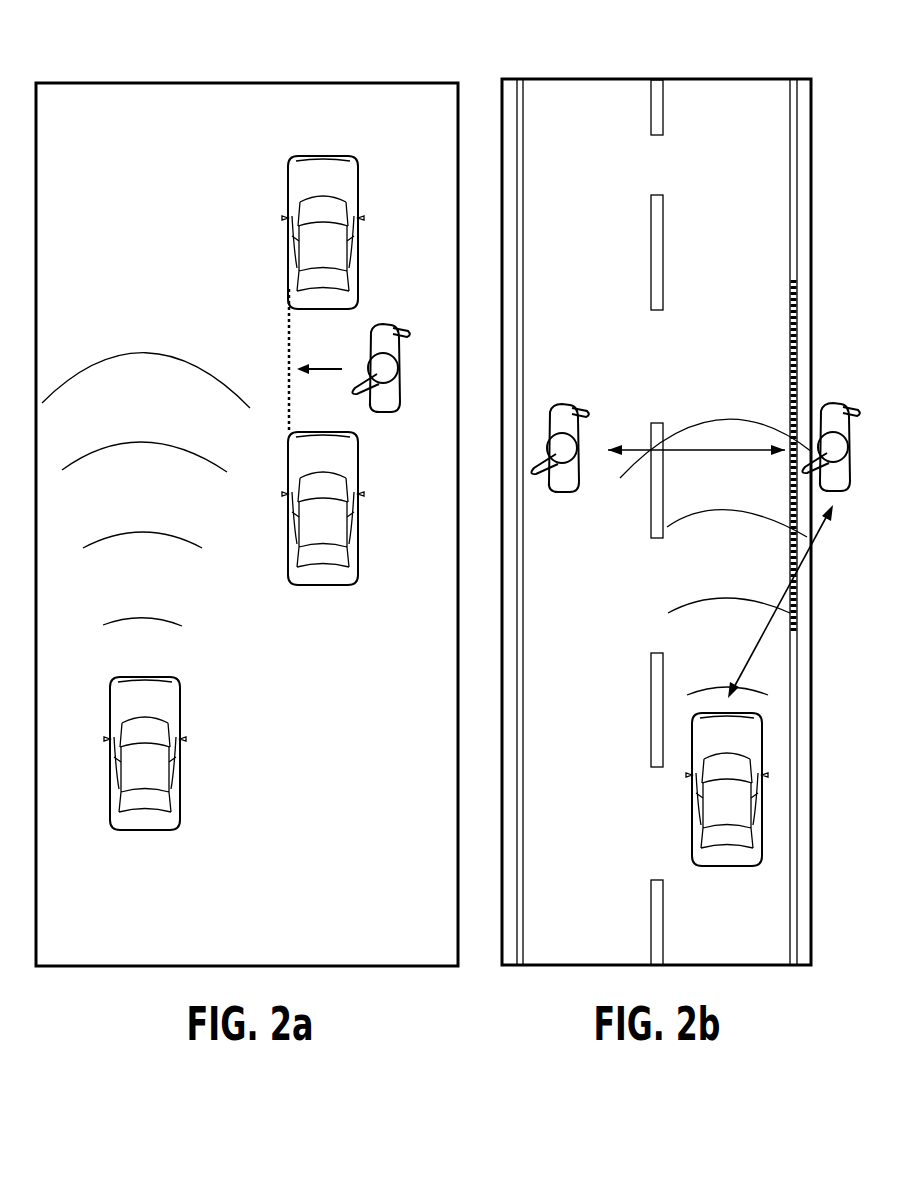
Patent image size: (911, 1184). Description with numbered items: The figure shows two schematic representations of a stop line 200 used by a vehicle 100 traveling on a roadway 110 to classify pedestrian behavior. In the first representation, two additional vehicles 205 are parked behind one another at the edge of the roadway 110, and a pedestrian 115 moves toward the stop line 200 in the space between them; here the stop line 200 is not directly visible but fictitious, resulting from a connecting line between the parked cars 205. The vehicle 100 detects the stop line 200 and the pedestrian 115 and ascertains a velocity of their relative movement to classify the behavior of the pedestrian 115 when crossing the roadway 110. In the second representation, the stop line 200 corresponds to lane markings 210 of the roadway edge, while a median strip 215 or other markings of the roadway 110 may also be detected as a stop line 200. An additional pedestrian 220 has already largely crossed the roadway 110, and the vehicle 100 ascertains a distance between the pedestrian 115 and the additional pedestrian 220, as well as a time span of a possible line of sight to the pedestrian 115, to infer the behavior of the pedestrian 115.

In FIG. 2A, the vehicle 100 is at (180, 705).
In FIG. 2B, the vehicle 100 is at (691, 797).
In FIG. 2A, the roadway 110 is at (128, 124).
In FIG. 2B, the roadway 110 is at (725, 116).
In FIG. 2A, the pedestrian 115 is at (384, 328).
In FIG. 2B, the pedestrian 115 is at (842, 408).
In FIG. 2A, the stop line 200 is at (287, 320).
In FIG. 2B, the stop line 200 is at (797, 297).
In FIG. 2A, the additional vehicles 205 is at (357, 183).
In FIG. 2B, the lane markings 210 is at (797, 226).
In FIG. 2B, the median strip 215 is at (650, 229).
In FIG. 2B, the additional pedestrian 220 is at (565, 408).